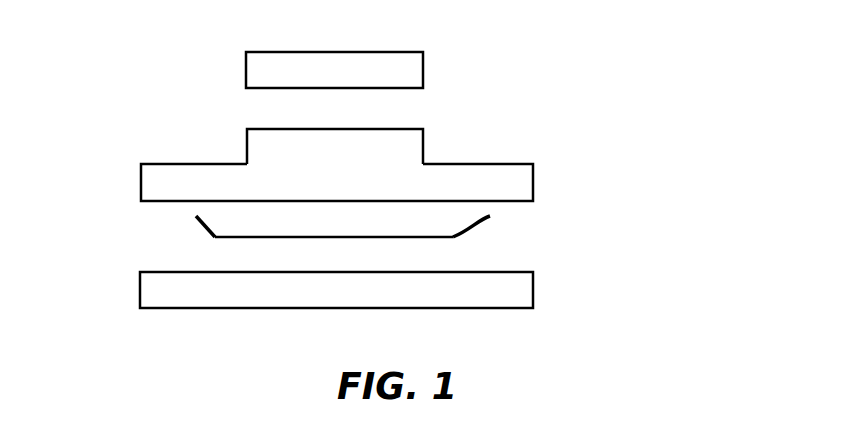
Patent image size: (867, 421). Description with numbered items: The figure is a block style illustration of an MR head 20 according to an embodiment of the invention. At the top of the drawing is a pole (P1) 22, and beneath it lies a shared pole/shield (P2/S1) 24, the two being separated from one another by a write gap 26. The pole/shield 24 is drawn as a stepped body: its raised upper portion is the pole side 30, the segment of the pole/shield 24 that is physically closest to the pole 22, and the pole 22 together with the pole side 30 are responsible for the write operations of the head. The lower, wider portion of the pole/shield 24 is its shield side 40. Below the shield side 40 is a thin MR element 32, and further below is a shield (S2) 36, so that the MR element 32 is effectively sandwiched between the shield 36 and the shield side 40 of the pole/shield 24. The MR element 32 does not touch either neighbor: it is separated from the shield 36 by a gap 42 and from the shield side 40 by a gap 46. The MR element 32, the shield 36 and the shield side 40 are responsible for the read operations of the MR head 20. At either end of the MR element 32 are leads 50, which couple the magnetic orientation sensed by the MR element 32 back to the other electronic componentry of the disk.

The MR head 20 is at (58, 84).
The pole (P1) 22 is at (426, 50).
The shared pole/shield (P2/S1) 24 is at (380, 157).
The write gap 26 is at (278, 103).
The pole side 30 is at (413, 137).
The MR element 32 is at (238, 239).
The shield (S2) 36 is at (535, 292).
The shield side 40 is at (523, 186).
The gap 42 is at (493, 252).
The gap 46 is at (347, 231).
The leads 50 is at (200, 232).